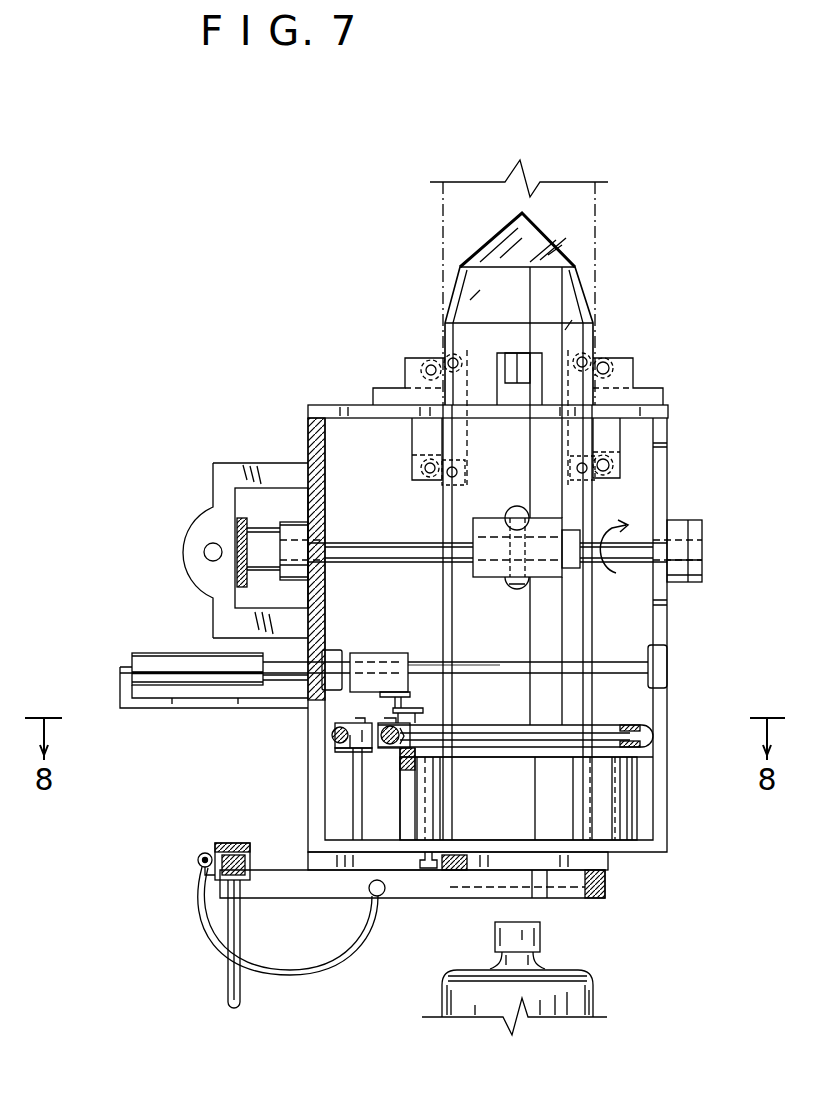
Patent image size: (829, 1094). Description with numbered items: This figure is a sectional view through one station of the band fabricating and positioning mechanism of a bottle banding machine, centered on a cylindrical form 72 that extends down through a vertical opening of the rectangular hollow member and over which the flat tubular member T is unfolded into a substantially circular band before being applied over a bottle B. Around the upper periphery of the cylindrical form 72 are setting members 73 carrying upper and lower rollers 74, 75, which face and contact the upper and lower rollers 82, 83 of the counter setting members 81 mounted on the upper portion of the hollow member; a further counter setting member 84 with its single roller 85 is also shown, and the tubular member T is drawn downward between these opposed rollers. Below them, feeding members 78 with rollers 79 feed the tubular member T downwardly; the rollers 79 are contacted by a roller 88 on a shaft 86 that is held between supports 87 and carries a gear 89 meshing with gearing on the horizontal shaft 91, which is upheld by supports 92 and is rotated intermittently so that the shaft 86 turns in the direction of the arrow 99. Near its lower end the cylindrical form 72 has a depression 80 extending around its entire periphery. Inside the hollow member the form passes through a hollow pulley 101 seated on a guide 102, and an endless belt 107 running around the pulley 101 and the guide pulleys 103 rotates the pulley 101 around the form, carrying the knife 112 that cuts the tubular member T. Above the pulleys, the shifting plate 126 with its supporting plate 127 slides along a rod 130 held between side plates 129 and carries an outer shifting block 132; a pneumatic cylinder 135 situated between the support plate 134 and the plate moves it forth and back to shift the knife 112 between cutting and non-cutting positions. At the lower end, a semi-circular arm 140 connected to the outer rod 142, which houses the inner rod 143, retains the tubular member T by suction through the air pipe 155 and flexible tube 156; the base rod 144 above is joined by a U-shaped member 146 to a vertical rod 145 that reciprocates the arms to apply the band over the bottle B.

The tubular member T is at (608, 195).
The cylindrical form 72 is at (565, 295).
The setting member 73 is at (470, 470).
The upper roller 74 is at (436, 358).
The lower roller 75 is at (452, 490).
The feeding member 78 is at (521, 592).
The roller 79 is at (508, 515).
The depression 80 is at (586, 866).
The counter setting member 81 is at (390, 395).
The upper roller 82 is at (405, 360).
The lower roller 83 is at (412, 470).
The counter setting member 84 is at (528, 350).
The roller 85 is at (510, 360).
The shaft 86 is at (378, 552).
The support 87 is at (285, 522).
The roller 88 is at (485, 579).
The gear 89 is at (248, 560).
The shaft 91 is at (204, 551).
The support 92 is at (198, 597).
The arrow 99 is at (616, 573).
The hollow pulley 101 is at (598, 727).
The guide 102 is at (640, 790).
The guide pulley 103 is at (353, 755).
The endless belt 107 is at (336, 735).
The knife 112 is at (450, 828).
The shifting plate 126 is at (410, 682).
The supporting plate 127 is at (410, 652).
The side plate 129 is at (362, 650).
The rod 130 is at (605, 655).
The outer shifting block 132 is at (425, 710).
The support plate 134 is at (150, 710).
The pneumatic cylinder 135 is at (140, 652).
The semi-circular arm 140 is at (425, 893).
The outer rod 142 is at (215, 850).
The inner rod 143 is at (248, 862).
The base rod 144 is at (240, 843).
The vertical rod 145 is at (228, 990).
The U-shaped member 146 is at (214, 874).
The air pipe 155 is at (198, 858).
The flexible tube 156 is at (300, 973).
The bottle B is at (595, 985).